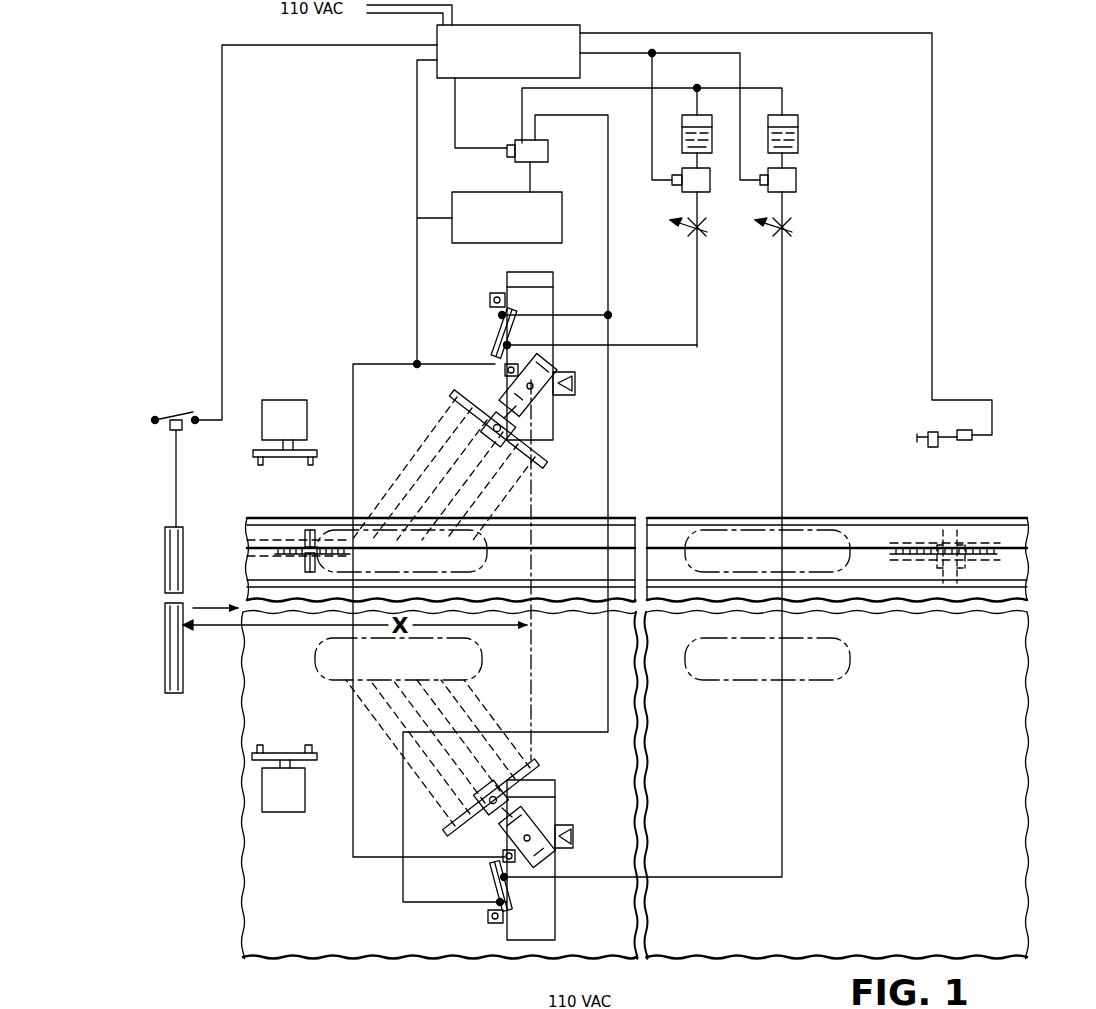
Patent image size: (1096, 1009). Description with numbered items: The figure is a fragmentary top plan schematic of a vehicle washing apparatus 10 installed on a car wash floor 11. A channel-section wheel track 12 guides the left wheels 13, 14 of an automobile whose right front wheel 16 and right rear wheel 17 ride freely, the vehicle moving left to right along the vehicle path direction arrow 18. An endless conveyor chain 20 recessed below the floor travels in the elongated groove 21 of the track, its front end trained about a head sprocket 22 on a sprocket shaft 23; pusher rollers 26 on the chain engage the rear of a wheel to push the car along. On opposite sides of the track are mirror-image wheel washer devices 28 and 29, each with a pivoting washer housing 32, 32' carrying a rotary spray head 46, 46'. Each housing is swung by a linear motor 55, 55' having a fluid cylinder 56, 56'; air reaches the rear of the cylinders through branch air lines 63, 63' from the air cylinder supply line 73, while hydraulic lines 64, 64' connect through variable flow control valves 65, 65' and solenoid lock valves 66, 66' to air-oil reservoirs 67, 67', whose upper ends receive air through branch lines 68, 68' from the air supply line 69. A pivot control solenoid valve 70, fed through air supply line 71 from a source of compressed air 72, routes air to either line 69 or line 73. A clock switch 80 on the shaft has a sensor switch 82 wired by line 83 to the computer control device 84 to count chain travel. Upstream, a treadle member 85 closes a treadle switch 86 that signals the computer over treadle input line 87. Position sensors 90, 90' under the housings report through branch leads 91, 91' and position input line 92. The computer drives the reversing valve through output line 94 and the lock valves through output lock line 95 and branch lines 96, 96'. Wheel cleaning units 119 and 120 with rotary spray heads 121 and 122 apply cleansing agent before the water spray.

The vehicle washing apparatus 10 is at (212, 236).
The car wash floor 11 is at (926, 867).
The wheel track 12 is at (656, 520).
The left wheel 13 is at (715, 530).
The left wheel 14 is at (490, 560).
The right front wheel 16 is at (800, 680).
The right rear wheel 17 is at (487, 664).
The vehicle path direction arrow 18 is at (208, 602).
The conveyor chain 20 is at (300, 538).
The elongated groove 21 is at (812, 548).
The head sprocket 22 is at (928, 556).
The sprocket shaft 23 is at (930, 432).
The pusher roller 26 is at (309, 528).
The wheel washer device 28 is at (518, 296).
The wheel washer device 29 is at (560, 913).
The washer housing 32 is at (547, 389).
The washer housing 32' is at (551, 827).
The rotary spray head 46 is at (452, 570).
The rotary spray head 46' is at (453, 761).
The linear motor 55 is at (475, 333).
The linear motor 55' is at (467, 886).
The fluid cylinder 56 is at (473, 340).
The fluid cylinder 56' is at (459, 910).
The branch air supply line 63 is at (555, 299).
The branch air line 63' is at (375, 880).
The hydraulic line 64 is at (601, 330).
The cylinder hydraulic supply line 64' is at (811, 795).
The variable flow control valve 65 is at (674, 269).
The flow control valve 65' is at (650, 534).
The solenoid lock valve 66 is at (669, 182).
The solenoid valve 66' is at (760, 182).
The air-oil reservoir 67 is at (667, 135).
The air-oil reservoir 67' is at (813, 134).
The branch air supply line 68 is at (711, 89).
The branch air supply line 68' is at (818, 98).
The air supply line 69 is at (592, 88).
The pivot control solenoid valve 70 is at (515, 142).
The air supply line 71 is at (530, 173).
The source of compressed air 72 is at (452, 218).
The air cylinder supply line 73 is at (608, 195).
The clock switch 80 is at (941, 424).
The sensor switch 82 is at (963, 430).
The line 83 is at (690, 33).
The computer control device 84 is at (580, 27).
The treadle member 85 is at (172, 660).
The treadle switch 86 is at (186, 413).
The treadle input line 87 is at (250, 44).
The position sensor 90 is at (582, 360).
The position sensor 90' is at (590, 862).
The branch lead 91 is at (429, 610).
The branch line 91' is at (330, 850).
The position input line 92 is at (417, 178).
The output line 94 is at (455, 127).
The output lock line 95 is at (616, 53).
The branch line 96 is at (644, 116).
The branch line 96' is at (768, 65).
The wheel cleaning unit 119 is at (288, 410).
The wheel cleaning unit 120 is at (297, 800).
The rotary spray head 121 is at (300, 457).
The rotary spray head 122 is at (288, 753).